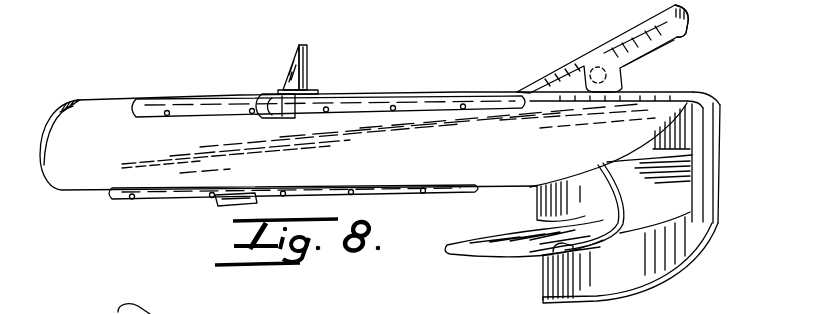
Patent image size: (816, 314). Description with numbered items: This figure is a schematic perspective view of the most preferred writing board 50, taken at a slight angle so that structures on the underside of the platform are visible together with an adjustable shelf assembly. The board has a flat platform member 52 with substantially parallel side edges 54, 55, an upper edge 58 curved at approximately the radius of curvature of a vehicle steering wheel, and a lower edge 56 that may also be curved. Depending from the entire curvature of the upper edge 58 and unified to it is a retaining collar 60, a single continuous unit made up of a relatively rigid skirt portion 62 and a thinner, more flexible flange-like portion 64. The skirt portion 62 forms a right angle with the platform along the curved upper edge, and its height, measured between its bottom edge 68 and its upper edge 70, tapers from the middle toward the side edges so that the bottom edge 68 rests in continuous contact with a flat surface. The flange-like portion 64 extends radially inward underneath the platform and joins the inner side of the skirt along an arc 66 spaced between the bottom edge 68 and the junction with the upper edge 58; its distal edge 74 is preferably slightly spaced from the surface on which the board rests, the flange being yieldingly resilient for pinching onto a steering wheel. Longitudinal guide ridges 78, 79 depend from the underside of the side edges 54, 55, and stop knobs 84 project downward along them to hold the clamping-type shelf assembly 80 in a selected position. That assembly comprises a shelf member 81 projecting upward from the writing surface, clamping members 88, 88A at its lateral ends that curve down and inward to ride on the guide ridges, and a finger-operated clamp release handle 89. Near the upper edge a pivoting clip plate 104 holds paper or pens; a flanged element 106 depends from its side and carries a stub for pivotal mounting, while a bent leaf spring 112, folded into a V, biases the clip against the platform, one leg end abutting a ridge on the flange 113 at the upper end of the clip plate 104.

The writing board 50 is at (80, 199).
The platform member 52 is at (68, 106).
The side edge 54 is at (172, 98).
The side edge 55 is at (100, 194).
The lower edge 56 is at (42, 160).
The upper edge 58 is at (707, 100).
The retaining collar 60 is at (601, 198).
The skirt portion 62 is at (713, 158).
The flange-like portion 64 is at (528, 257).
The arc 66 is at (537, 220).
The bottom edge 68 is at (647, 297).
The upper edge 70 is at (693, 112).
The distal edge 74 is at (490, 262).
The guide ridge 78 is at (458, 111).
The guide ridge 79 is at (398, 184).
The shelf assembly 80 is at (308, 60).
The shelf member 81 is at (287, 76).
The stop knob 84 is at (396, 112).
The clamping member 88 is at (333, 78).
The clamping member 88A is at (235, 207).
The clamp release handle 89 is at (312, 92).
The clip plate 104 is at (596, 50).
The flanged element 106 is at (590, 68).
The leaf spring 112 is at (640, 60).
The flange 113 is at (690, 15).